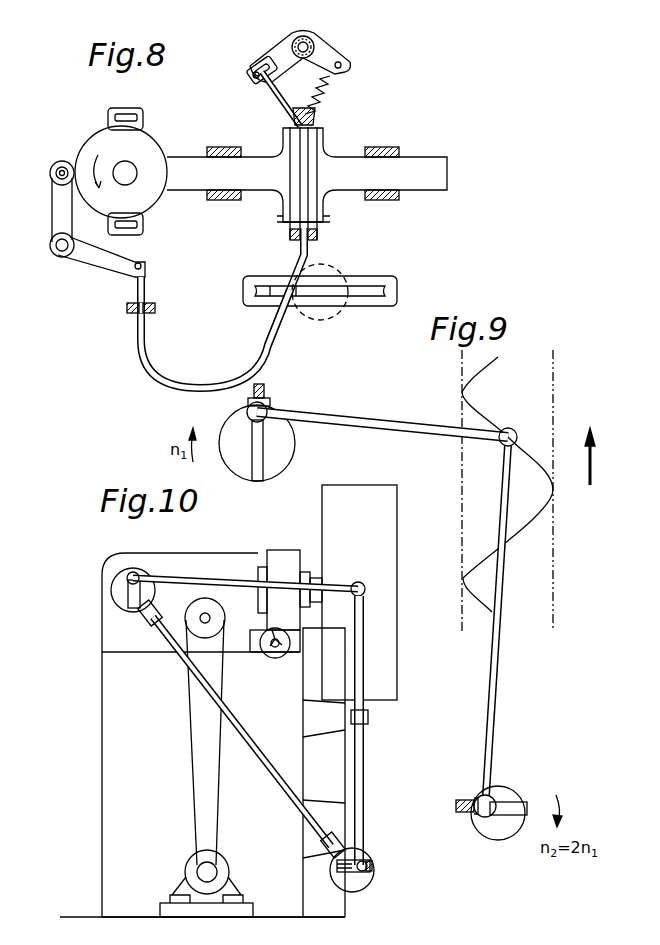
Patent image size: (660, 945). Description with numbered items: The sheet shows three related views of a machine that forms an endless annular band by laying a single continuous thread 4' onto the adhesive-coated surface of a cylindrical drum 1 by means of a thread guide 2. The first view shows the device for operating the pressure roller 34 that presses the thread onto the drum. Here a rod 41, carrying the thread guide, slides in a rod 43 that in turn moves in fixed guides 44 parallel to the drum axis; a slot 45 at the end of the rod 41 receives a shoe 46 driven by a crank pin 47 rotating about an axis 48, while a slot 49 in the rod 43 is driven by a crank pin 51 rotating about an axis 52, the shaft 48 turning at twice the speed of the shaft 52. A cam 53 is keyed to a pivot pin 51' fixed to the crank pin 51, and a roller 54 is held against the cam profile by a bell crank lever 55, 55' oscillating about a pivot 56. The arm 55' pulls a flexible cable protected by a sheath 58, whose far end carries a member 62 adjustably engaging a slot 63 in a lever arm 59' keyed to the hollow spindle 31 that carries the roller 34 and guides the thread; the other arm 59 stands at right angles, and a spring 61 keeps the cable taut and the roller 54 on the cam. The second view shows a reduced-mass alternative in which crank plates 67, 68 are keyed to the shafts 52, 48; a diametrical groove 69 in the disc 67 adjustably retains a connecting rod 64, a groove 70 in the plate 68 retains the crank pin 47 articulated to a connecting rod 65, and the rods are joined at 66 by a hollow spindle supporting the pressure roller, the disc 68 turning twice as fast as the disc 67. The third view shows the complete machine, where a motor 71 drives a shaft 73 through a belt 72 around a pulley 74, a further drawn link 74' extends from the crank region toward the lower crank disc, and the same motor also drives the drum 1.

In FIG. 9, the cylindrical drum 1 is at (462, 497).
In FIG. 10, the cylindrical drum 1 is at (385, 536).
In FIG. 9, the thread guide 2 is at (502, 445).
In FIG. 10, the thread guide 2 is at (366, 589).
In FIG. 9, the continuous thread 4' is at (507, 484).
In FIG. 8, the spindle 31 is at (312, 42).
In FIG. 8, the roller 34 is at (293, 39).
In FIG. 8, the rod 41 is at (310, 252).
In FIG. 8, the rod 43 is at (260, 190).
In FIG. 8, the fixed guides 44 is at (210, 200).
In FIG. 8, the slot 45 is at (378, 306).
In FIG. 8, the shoe 46 is at (304, 300).
In FIG. 9, the crank pin 47 is at (482, 818).
In FIG. 10, the crank pin 47 is at (368, 860).
In FIG. 9, the axis 48 is at (505, 806).
In FIG. 10, the axis 48 is at (350, 858).
In FIG. 8, the slot 49 is at (128, 108).
In FIG. 9, the crank pin 51 is at (280, 399).
In FIG. 10, the crank pin 51 is at (128, 553).
In FIG. 8, the pivot pin 51' is at (149, 145).
In FIG. 9, the axis 52 is at (262, 442).
In FIG. 10, the axis 52 is at (128, 592).
In FIG. 8, the cam 53 is at (90, 133).
In FIG. 8, the roller 54 is at (57, 162).
In FIG. 8, the bell crank lever arm 55 is at (49, 210).
In FIG. 8, the bell crank lever arm 55' is at (101, 270).
In FIG. 8, the pivot 56 is at (62, 257).
In FIG. 8, the sheath 58 is at (272, 352).
In FIG. 8, the bell crank lever arm 59 is at (282, 55).
In FIG. 8, the bell crank lever arm 59' is at (360, 52).
In FIG. 8, the spring 61 is at (325, 90).
In FIG. 8, the member 62 is at (255, 63).
In FIG. 8, the slot 63 is at (255, 79).
In FIG. 9, the connecting rod 64 is at (404, 430).
In FIG. 10, the connecting rod 64 is at (208, 575).
In FIG. 9, the connecting rod 65 is at (500, 638).
In FIG. 10, the connecting rod 65 is at (364, 647).
In FIG. 9, the articulation 66 is at (515, 432).
In FIG. 10, the articulation 66 is at (365, 585).
In FIG. 9, the crank plate 67 is at (240, 462).
In FIG. 10, the crank plate 67 is at (122, 575).
In FIG. 9, the crank plate 68 is at (506, 838).
In FIG. 10, the crank plate 68 is at (362, 878).
In FIG. 9, the groove 69 is at (270, 466).
In FIG. 10, the groove 69 is at (125, 600).
In FIG. 9, the groove 70 is at (520, 812).
In FIG. 10, the groove 70 is at (346, 888).
In FIG. 10, the motor 71 is at (222, 868).
In FIG. 10, the belt 72 is at (186, 757).
In FIG. 10, the shaft 73 is at (210, 618).
In FIG. 10, the pulley 74 is at (171, 671).
In FIG. 10, the drive link 74' is at (242, 729).